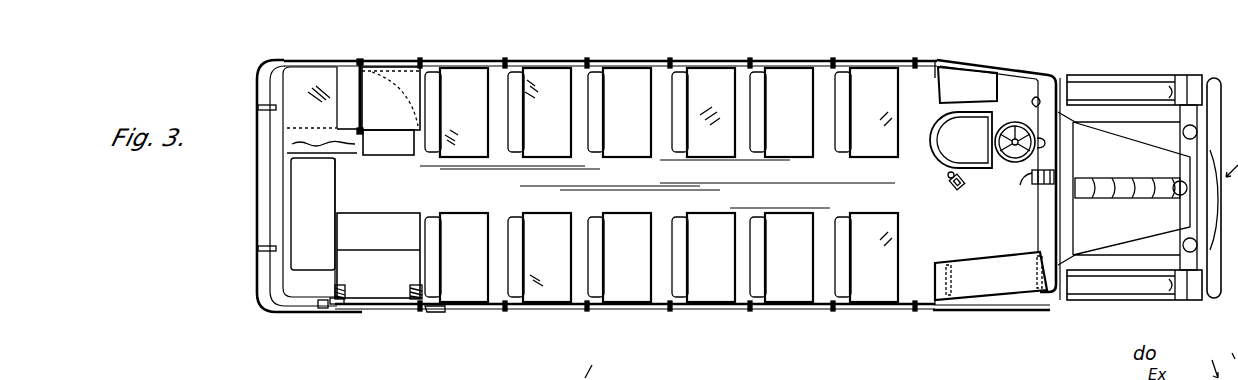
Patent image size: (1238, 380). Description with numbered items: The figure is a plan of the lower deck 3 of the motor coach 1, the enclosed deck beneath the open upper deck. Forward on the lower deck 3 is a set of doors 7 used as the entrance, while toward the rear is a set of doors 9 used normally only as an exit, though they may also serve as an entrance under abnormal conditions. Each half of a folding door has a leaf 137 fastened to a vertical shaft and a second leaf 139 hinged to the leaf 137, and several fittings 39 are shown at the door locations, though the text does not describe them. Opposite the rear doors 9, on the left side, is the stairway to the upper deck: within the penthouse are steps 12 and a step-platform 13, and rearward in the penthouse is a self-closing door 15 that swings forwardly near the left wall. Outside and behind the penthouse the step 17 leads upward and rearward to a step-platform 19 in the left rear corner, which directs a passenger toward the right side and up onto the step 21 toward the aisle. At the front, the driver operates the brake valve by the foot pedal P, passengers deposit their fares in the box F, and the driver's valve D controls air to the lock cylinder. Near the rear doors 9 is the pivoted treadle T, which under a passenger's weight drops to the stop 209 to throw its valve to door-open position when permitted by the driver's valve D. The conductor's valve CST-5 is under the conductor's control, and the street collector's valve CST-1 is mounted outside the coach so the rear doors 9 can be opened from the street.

The motor coach 1 is at (1090, 262).
The lower deck 3 is at (657, 184).
The doors 7 is at (1030, 268).
The doors 9 is at (410, 292).
The steps 12 is at (390, 140).
The step-platform 13 is at (405, 95).
The self closing door 15 is at (358, 92).
The step 17 is at (338, 100).
The step-platform 19 is at (322, 110).
The step 21 is at (318, 136).
The fittings 39 is at (322, 305).
The leaf 137 is at (346, 306).
The leaf 139 is at (389, 307).
The stop 209 is at (608, 365).
The foot pedal P is at (1033, 102).
The fare box F is at (952, 188).
The driver's valve D is at (1032, 185).
The treadle T is at (355, 250).
The conductor's valve CST-5 is at (340, 298).
The street collector's valve CST-1 is at (434, 312).